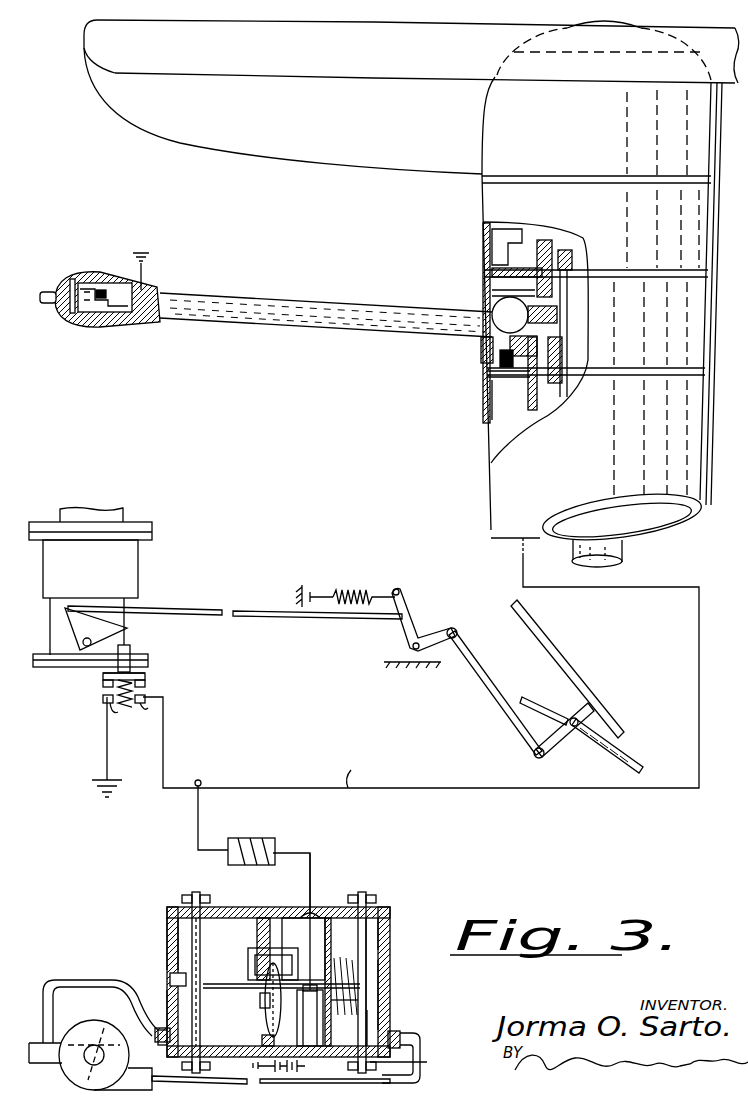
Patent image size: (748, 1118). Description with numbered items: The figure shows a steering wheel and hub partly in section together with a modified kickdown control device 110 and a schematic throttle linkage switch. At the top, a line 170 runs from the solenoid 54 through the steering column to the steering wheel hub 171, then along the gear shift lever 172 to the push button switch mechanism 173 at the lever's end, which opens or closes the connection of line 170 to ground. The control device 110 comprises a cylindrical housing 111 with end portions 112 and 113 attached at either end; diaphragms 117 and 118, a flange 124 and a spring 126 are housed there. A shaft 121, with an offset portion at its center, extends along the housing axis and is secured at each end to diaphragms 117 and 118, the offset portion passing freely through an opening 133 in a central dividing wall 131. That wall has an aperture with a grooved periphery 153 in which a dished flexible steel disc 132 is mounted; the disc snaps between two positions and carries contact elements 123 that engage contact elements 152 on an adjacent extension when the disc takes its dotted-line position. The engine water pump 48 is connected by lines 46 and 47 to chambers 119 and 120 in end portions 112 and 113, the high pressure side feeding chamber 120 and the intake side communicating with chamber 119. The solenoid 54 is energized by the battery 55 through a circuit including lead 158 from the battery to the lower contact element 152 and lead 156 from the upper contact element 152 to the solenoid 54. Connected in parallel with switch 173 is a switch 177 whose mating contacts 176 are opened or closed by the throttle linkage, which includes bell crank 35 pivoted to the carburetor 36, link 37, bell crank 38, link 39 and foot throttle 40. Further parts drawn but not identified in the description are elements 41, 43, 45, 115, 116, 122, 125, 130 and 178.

The bell crank 35 is at (125, 633).
The carburetor 36 is at (147, 566).
The link 37 is at (262, 610).
The bell crank 38 is at (418, 613).
The link 39 is at (478, 676).
The foot throttle 40 is at (570, 749).
The pedal 41 is at (628, 760).
The pipe connection 43 is at (160, 1050).
The pipe fitting 45 is at (157, 1030).
The line 46 is at (46, 1002).
The line 47 is at (377, 1083).
The engine water pump 48 is at (127, 1087).
The solenoid 54 is at (281, 843).
The battery 55 is at (293, 1078).
The kickdown control device 110 is at (396, 947).
The cylindrical housing 111 is at (331, 915).
The end portion 112 is at (167, 932).
The end portion 113 is at (391, 920).
The end plate 115 is at (200, 892).
The bolts 116 is at (190, 892).
The diaphragm 117 is at (200, 938).
The diaphragm 118 is at (387, 1007).
The chamber 119 is at (178, 955).
The chamber 120 is at (387, 933).
The shaft 121 is at (253, 967).
The port 122 is at (173, 973).
The contact elements 123 is at (263, 1013).
The flange 124 is at (292, 915).
The port 125 is at (387, 993).
The spring 126 is at (340, 957).
The cylinder 130 is at (320, 1036).
The dividing wall 131 is at (260, 912).
The dished flexible steel disc 132 is at (253, 1035).
The opening 133 is at (253, 948).
The contact elements 152 is at (320, 1020).
The aperture with grooved periphery 153 is at (253, 1047).
The lead 156 is at (315, 863).
The lead 158 is at (301, 1068).
The line 170 is at (534, 413).
The steering wheel hub 171 is at (468, 197).
The gear shift lever 172 is at (343, 330).
The push button switch mechanism 173 is at (57, 313).
The mating contacts 176 is at (145, 691).
The switch 177 is at (100, 689).
The spring 178 is at (118, 710).